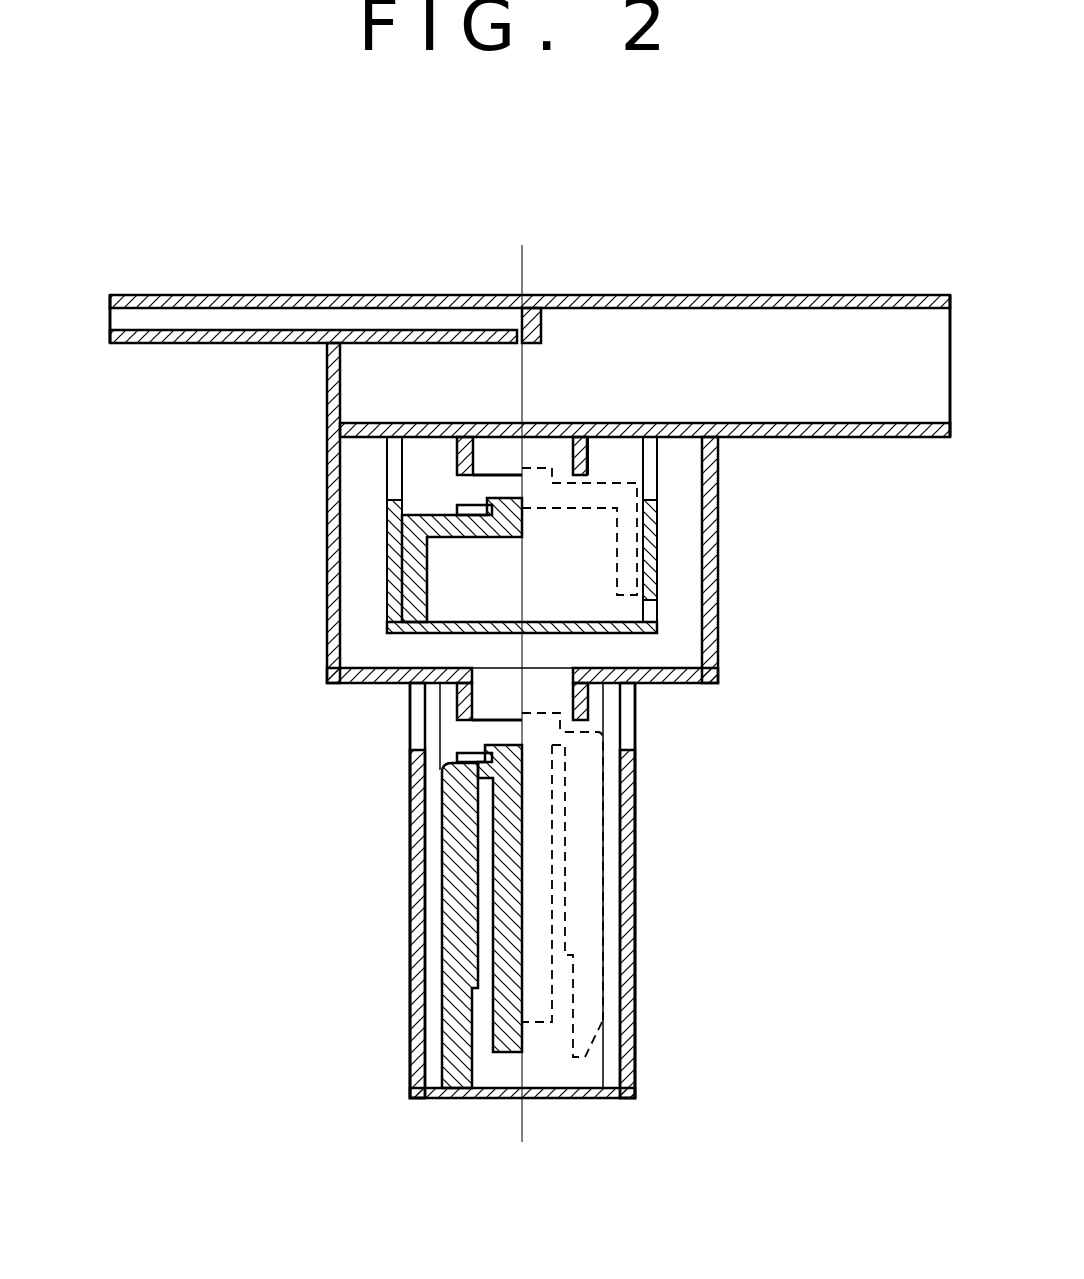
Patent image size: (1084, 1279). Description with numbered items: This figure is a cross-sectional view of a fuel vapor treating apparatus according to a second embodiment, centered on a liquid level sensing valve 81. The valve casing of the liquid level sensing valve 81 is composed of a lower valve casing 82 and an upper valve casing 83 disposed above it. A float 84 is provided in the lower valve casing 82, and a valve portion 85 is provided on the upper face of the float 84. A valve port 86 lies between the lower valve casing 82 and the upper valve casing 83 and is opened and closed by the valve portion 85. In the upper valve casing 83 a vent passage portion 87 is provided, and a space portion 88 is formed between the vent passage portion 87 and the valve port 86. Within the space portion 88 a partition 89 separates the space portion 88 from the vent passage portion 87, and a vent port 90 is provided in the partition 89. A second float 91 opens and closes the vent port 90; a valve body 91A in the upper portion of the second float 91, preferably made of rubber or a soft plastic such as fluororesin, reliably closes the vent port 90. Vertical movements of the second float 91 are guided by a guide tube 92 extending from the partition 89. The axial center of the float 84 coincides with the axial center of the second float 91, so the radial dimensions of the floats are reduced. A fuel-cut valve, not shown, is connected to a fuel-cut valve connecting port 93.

The liquid level sensing valve 81 is at (648, 852).
The lower valve casing 82 is at (635, 905).
The upper valve casing 83 is at (333, 545).
The float 84 is at (462, 930).
The valve portion 85 is at (470, 768).
The valve port 86 is at (470, 712).
The vent passage portion 87 is at (835, 295).
The space portion 88 is at (678, 508).
The partition 89 is at (592, 440).
The vent port 90 is at (470, 456).
The second float 91 is at (410, 595).
The valve body 91A is at (457, 506).
The guide tube 92 is at (652, 573).
The fuel-cut valve connecting port 93 is at (218, 295).